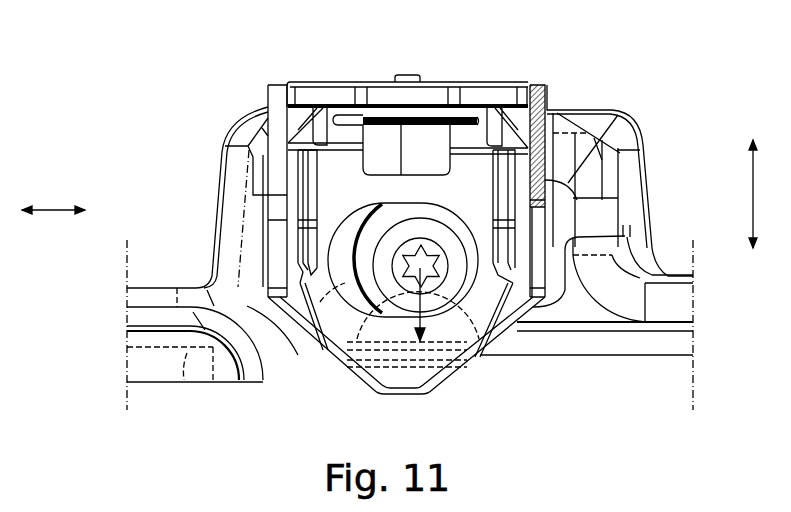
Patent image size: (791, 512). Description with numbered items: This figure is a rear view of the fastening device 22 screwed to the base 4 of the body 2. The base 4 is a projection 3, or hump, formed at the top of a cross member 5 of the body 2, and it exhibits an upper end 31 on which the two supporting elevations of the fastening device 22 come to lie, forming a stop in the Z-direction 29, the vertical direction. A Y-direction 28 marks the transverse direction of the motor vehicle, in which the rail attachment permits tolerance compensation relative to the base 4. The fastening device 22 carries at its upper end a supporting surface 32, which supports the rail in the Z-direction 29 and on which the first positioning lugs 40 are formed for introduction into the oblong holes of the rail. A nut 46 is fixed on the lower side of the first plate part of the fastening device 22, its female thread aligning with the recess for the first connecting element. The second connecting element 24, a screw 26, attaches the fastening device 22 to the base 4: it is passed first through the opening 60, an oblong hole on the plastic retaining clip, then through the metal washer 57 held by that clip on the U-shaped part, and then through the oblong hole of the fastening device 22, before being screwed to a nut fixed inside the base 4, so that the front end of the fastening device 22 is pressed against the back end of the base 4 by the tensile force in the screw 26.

The body 2 is at (188, 350).
The projection 3 is at (233, 194).
The base 4 is at (648, 184).
The cross member 5 is at (682, 326).
The fastening device 22 is at (560, 110).
The second connecting element 24 is at (478, 352).
The screw 26 is at (399, 272).
The Y-direction 28 is at (53, 212).
The Z-direction 29 is at (750, 160).
The upper end 31 is at (557, 104).
The supporting surface 32 is at (473, 82).
The first positioning lug 40 is at (410, 76).
The nut 46 is at (386, 147).
The washer 57 is at (345, 300).
The opening 60 is at (298, 356).